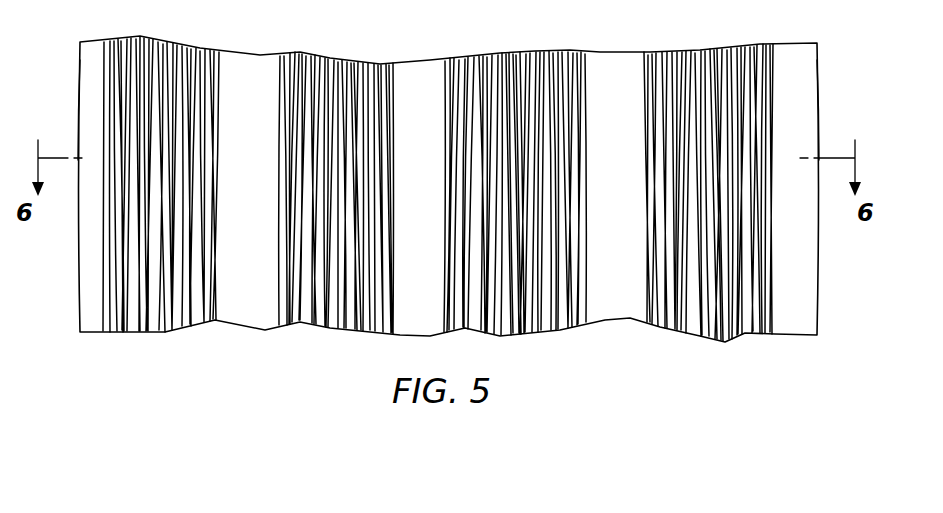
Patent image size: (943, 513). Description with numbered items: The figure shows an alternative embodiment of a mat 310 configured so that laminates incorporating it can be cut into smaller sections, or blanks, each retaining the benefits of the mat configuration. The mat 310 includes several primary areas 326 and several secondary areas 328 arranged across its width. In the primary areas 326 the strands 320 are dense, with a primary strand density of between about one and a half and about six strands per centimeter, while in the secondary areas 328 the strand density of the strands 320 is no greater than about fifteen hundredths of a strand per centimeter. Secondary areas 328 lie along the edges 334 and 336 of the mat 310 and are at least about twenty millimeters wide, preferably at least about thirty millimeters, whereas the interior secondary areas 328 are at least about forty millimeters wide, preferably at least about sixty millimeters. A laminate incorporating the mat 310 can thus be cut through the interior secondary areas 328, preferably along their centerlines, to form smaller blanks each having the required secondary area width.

The mat 310 is at (112, 346).
The strands 320 is at (310, 312).
The primary areas 326 is at (148, 292).
The secondary areas 328 is at (251, 66).
The edge 334 is at (80, 106).
The edge 336 is at (817, 108).